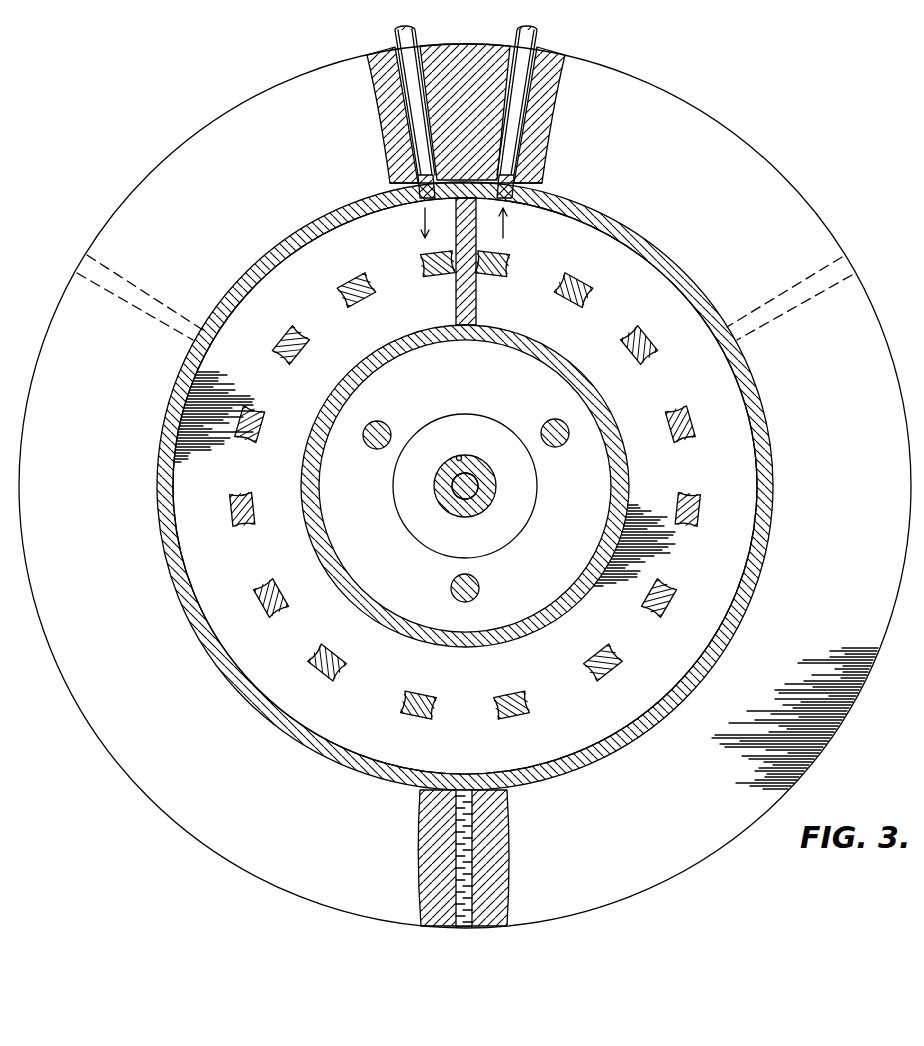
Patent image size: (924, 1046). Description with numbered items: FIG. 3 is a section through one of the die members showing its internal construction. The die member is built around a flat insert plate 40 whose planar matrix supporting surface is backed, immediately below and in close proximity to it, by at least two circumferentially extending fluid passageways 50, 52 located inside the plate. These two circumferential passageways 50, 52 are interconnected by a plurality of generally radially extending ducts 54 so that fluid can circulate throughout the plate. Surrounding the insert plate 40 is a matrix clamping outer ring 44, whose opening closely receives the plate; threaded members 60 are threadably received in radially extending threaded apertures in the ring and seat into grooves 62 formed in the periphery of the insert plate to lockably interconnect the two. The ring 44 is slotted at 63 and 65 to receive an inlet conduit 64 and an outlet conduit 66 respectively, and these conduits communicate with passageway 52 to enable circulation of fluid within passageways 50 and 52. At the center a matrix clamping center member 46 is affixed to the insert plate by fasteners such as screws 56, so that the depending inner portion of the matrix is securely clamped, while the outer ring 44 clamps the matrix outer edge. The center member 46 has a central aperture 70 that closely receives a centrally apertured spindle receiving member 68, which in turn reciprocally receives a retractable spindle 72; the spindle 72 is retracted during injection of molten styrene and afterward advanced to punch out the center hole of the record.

The flat insert plate 40 is at (160, 512).
The matrix clamping outer ring 44 is at (465, 486).
The matrix clamping center member 46 is at (413, 530).
The fluid passageway 50 is at (283, 545).
The fluid passageway 52 is at (230, 628).
The radially extending duct 54 is at (320, 318).
The screw 56 is at (387, 425).
The threaded member 60 is at (770, 303).
The groove 62 is at (480, 782).
The slot 63 is at (392, 57).
The inlet conduit 64 is at (415, 128).
The slot 65 is at (545, 68).
The outlet conduit 66 is at (533, 117).
The spindle receiving member 68 is at (488, 493).
The central aperture 70 is at (460, 455).
The retractable spindle 72 is at (455, 490).